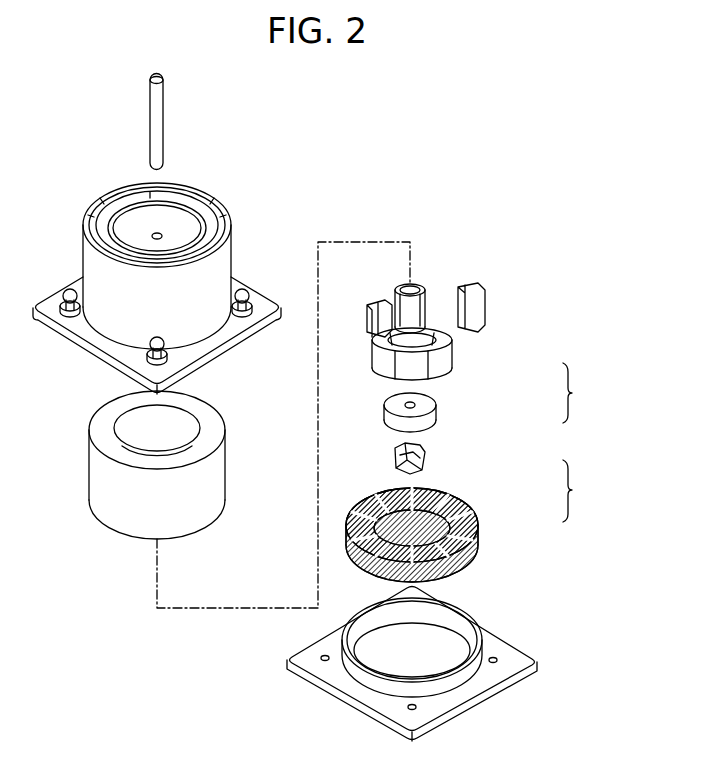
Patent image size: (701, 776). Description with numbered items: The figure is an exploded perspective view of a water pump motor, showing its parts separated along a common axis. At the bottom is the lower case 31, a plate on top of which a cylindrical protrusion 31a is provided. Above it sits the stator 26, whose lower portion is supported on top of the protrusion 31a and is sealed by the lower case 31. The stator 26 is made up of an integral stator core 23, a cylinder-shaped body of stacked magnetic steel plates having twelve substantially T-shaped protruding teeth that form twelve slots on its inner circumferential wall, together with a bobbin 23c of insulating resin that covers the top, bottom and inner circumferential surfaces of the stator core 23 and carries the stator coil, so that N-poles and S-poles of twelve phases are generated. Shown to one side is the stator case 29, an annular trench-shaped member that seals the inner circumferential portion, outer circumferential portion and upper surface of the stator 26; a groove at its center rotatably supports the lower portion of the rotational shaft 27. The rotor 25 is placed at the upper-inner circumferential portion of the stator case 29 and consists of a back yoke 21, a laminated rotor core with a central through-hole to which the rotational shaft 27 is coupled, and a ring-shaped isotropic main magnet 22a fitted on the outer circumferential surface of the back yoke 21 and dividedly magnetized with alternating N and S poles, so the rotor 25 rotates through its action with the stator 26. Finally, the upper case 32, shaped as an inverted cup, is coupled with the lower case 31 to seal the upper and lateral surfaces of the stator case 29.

The back yoke 21 is at (440, 412).
The ring-shaped isotropic main magnet 22a is at (436, 365).
The integral stator core 23 is at (470, 521).
The bobbin 23c is at (428, 456).
The rotor 25 is at (585, 393).
The stator 26 is at (587, 491).
The rotational shaft 27 is at (151, 117).
The stator case 29 is at (96, 482).
The lower case 31 is at (522, 683).
The cylindrical protrusion 31a is at (502, 638).
The upper case 32 is at (108, 200).